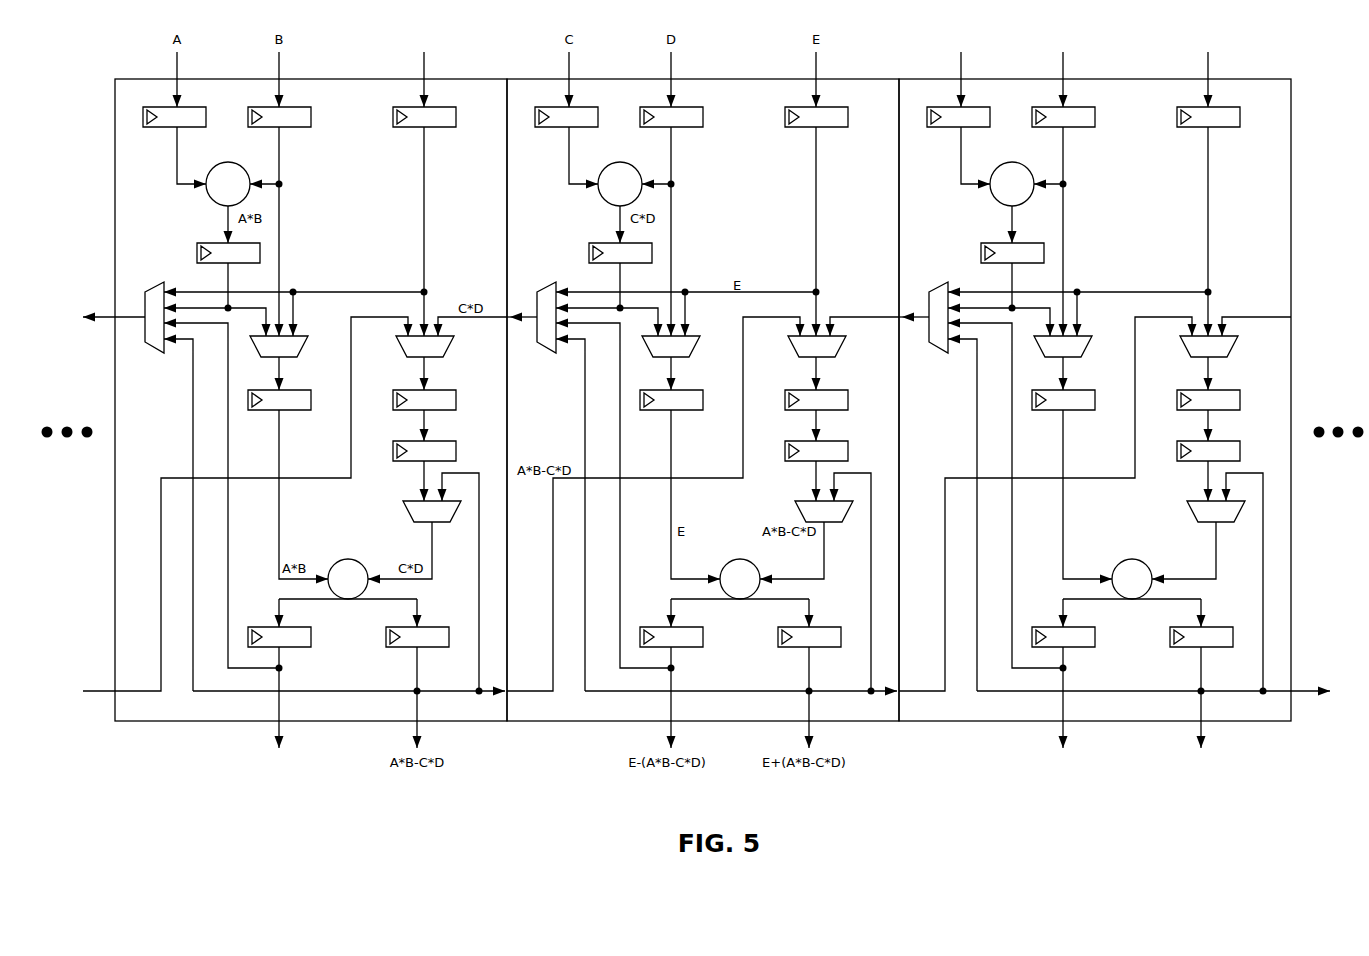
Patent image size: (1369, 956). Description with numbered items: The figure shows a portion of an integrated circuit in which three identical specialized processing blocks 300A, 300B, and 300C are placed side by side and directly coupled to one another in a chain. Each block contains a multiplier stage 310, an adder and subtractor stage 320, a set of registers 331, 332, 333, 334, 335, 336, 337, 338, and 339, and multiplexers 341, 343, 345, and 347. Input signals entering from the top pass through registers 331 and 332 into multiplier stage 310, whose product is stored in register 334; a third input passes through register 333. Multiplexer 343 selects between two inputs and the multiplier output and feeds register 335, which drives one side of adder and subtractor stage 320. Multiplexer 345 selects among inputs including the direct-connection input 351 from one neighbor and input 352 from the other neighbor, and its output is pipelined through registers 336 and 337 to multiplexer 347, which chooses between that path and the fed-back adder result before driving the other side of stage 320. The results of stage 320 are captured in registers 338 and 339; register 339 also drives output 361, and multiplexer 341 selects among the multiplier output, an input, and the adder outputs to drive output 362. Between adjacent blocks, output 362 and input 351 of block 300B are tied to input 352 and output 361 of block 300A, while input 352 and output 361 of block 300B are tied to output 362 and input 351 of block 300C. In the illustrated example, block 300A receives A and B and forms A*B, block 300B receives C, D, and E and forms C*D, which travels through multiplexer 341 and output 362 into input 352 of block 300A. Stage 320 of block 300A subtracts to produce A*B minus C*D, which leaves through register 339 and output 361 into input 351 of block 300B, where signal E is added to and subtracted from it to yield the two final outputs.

The specialized processing block 300A is at (195, 79).
The specialized processing block 300B is at (703, 392).
The specialized processing block 300C is at (1095, 392).
The multiplier stage 310 is at (225, 163).
The adder and subtractor stage 320 is at (348, 560).
The register 331 is at (190, 107).
The register 332 is at (293, 107).
The register 333 is at (438, 107).
The register 334 is at (212, 243).
The register 335 is at (297, 390).
The register 336 is at (442, 390).
The register 337 is at (442, 441).
The register 338 is at (293, 627).
The register 339 is at (432, 627).
The multiplexer 341 is at (158, 284).
The multiplexer 343 is at (303, 336).
The multiplexer 345 is at (415, 357).
The multiplexer 347 is at (418, 501).
The input 351 is at (118, 693).
The input 352 is at (505, 320).
The output 361 is at (505, 695).
The output 362 is at (122, 320).